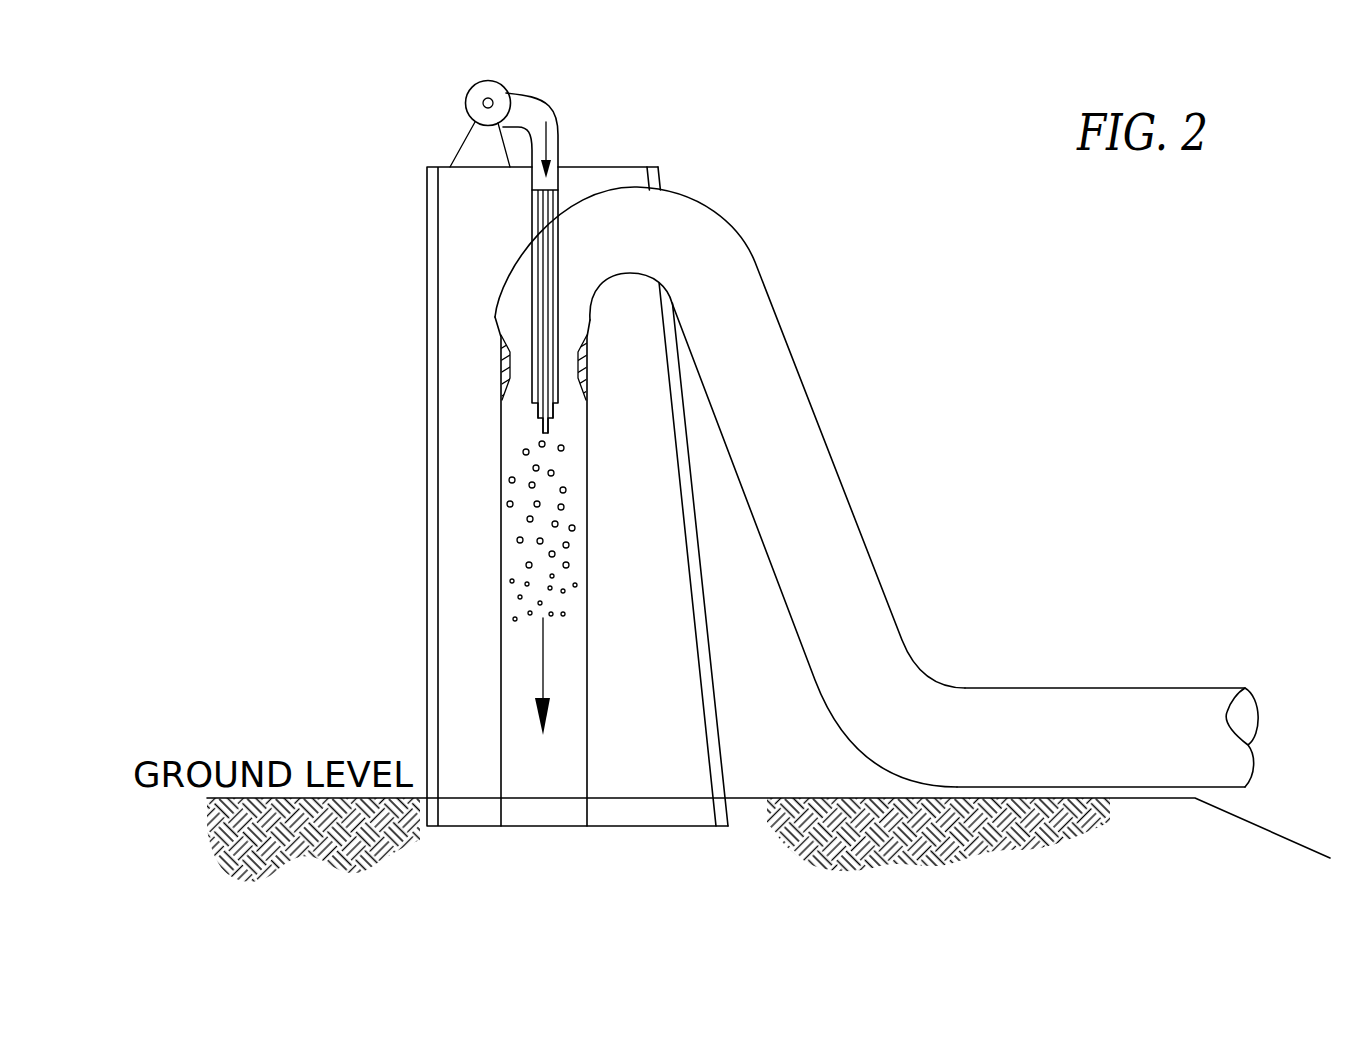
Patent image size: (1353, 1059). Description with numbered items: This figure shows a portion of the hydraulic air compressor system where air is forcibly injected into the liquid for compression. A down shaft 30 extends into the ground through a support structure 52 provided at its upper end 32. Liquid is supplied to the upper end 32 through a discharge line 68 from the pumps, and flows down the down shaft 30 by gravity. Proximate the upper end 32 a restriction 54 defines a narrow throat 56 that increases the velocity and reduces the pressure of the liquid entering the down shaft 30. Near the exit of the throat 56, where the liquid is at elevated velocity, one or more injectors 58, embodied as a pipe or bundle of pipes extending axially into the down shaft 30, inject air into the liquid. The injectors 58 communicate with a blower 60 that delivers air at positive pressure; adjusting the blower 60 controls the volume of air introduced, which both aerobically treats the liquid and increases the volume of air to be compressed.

The down shaft 30 is at (563, 667).
The upper end 32 is at (708, 207).
The support structure 52 is at (427, 259).
The restriction 54 is at (580, 363).
The throat 56 is at (508, 363).
The injectors 58 is at (558, 252).
The blower 60 is at (470, 93).
The discharge line 68 is at (1005, 688).